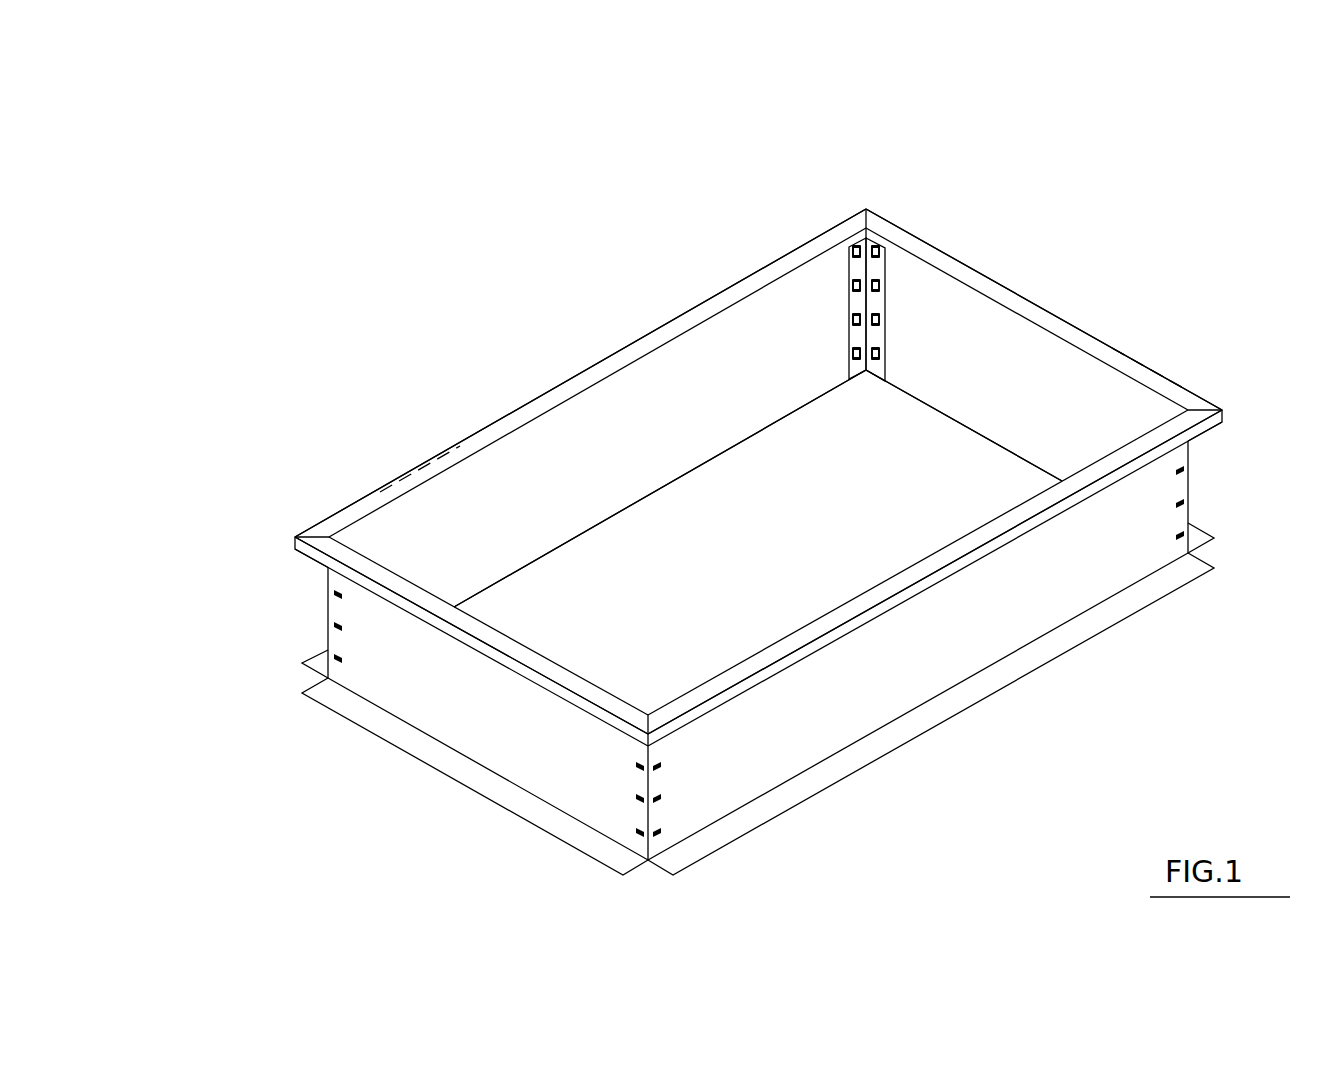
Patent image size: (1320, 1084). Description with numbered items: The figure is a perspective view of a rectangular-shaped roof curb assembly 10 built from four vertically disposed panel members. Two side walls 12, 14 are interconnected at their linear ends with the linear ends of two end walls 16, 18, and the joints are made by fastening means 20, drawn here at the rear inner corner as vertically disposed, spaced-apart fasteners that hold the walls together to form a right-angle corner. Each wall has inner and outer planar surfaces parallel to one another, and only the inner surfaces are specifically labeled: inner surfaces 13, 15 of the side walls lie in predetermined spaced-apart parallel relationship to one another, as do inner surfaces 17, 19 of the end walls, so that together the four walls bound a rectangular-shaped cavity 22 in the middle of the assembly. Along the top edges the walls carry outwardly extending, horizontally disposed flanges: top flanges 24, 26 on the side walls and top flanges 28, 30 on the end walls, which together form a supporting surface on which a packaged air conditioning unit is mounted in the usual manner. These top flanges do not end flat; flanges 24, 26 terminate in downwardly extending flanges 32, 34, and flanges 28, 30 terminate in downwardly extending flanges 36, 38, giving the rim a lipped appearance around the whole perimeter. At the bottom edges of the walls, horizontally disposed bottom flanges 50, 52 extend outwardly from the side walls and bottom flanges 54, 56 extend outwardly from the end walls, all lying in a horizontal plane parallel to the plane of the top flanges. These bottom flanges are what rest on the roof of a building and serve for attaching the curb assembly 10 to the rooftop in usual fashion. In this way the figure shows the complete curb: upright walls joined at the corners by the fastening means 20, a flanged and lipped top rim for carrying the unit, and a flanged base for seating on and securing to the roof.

The curb assembly 10 is at (565, 285).
The side wall 12 is at (508, 410).
The inner planar surface of side wall 13 is at (690, 405).
The side wall 14 is at (985, 625).
The inner planar surface of side wall 15 is at (758, 650).
The end wall 16 is at (580, 765).
The inner planar surface of end wall 17 is at (550, 655).
The end wall 18 is at (1080, 325).
The inner planar surface of end wall 19 is at (970, 400).
The fastening means 20 is at (880, 315).
The rectangular-shaped cavity 22 is at (803, 440).
The top flange 24 is at (742, 290).
The top flange 26 is at (1090, 425).
The top flange 28 is at (348, 553).
The top flange 30 is at (1007, 295).
The downwardly extending flange 32 is at (415, 472).
The downwardly extending flange 34 is at (880, 612).
The downwardly extending flange 36 is at (425, 620).
The downwardly extending flange 38 is at (1150, 368).
The bottom flange 50 is at (315, 655).
The bottom flange 52 is at (750, 822).
The bottom flange 54 is at (537, 810).
The bottom flange 56 is at (1205, 530).